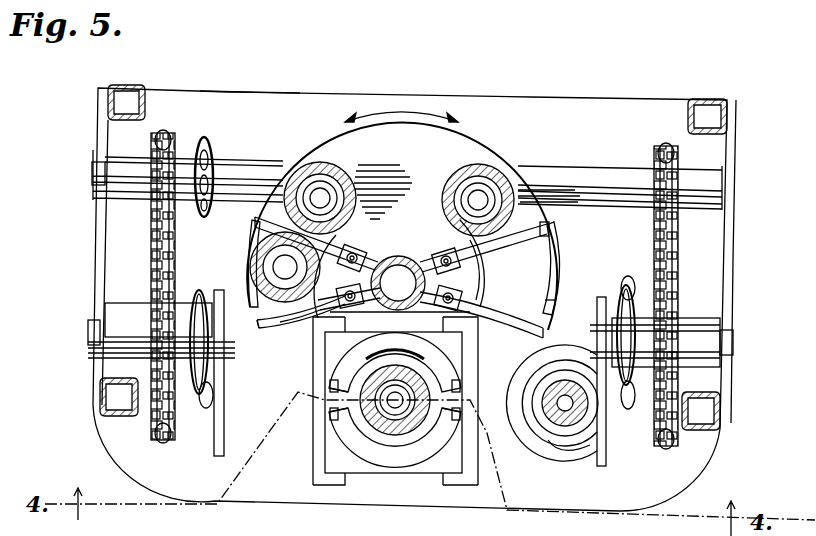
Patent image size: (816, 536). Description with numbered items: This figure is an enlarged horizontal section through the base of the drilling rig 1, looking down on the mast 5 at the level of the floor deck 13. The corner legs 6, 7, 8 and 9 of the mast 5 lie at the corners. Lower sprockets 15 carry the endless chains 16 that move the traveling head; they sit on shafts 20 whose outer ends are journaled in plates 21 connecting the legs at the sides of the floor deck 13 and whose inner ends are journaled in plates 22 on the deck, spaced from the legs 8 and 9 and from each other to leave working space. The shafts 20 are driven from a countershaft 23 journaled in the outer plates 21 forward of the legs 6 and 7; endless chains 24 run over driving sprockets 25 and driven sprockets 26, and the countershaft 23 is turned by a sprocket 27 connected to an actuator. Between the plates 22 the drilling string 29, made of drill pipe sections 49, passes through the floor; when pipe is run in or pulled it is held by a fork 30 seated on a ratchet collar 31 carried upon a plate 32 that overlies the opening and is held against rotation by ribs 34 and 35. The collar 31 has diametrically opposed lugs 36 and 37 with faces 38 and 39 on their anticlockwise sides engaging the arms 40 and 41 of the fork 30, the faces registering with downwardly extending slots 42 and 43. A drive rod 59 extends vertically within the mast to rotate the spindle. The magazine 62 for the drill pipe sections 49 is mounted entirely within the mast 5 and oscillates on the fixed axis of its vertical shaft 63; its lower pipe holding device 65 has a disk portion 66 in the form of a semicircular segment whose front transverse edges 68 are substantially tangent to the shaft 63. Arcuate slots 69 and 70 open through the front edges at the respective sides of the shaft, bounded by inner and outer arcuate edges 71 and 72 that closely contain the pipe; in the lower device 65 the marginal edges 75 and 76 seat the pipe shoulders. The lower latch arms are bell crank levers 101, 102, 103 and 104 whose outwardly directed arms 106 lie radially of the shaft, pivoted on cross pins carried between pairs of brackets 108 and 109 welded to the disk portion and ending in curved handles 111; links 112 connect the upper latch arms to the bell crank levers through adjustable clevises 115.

The machine frame 1 is at (736, 105).
The mast 5 is at (612, 97).
The corner leg 6 is at (122, 88).
The corner leg 7 is at (706, 99).
The corner leg 8 is at (116, 415).
The corner leg 9 is at (722, 425).
The floor deck 13 is at (240, 101).
The lower sprockets 15 is at (210, 367).
The endless chains 16 is at (214, 398).
The shafts 20 is at (108, 316).
The plates 21 is at (100, 268).
The plates 22 is at (226, 446).
The countershaft 23 is at (98, 172).
The endless chains 24 is at (152, 238).
The driving sprockets 25 is at (163, 443).
The driven sprockets 26 is at (168, 134).
The sprocket 27 is at (213, 148).
The drilling string 29 is at (409, 448).
The fork 30 is at (357, 427).
The ratchet collar 31 is at (373, 455).
The plate 32 is at (330, 457).
The rib 34 is at (322, 481).
The rib 35 is at (472, 483).
The lug 36 is at (340, 423).
The lug 37 is at (442, 372).
The face 38 is at (330, 412).
The face 39 is at (460, 386).
The arm 40 is at (330, 388).
The arm 41 is at (460, 405).
The slot 42 is at (335, 382).
The slot 43 is at (455, 430).
The drill pipe sections 49 is at (320, 185).
The drive rod 59 is at (555, 440).
The magazine 62 is at (505, 156).
The vertical shaft 63 is at (405, 263).
The lower pipe holding device 65 is at (553, 257).
The disk portion 66 is at (425, 127).
The front transverse edges 68 is at (372, 313).
The arcuate slot 69 is at (260, 232).
The arcuate slot 70 is at (545, 290).
The inner arcuate edge 71 is at (362, 245).
The outer arcuate edge 72 is at (548, 305).
The marginal edge 75 is at (252, 250).
The marginal edge 76 is at (300, 313).
The bell crank lever 101 is at (352, 171).
The bell crank lever 102 is at (293, 329).
The bell crank lever 103 is at (497, 246).
The bell crank lever 104 is at (490, 313).
The outwardly directed arms 106 is at (497, 301).
The bracket 108 is at (440, 255).
The bracket 109 is at (446, 255).
The handles 111 is at (258, 328).
The links 112 is at (360, 257).
The clevises 115 is at (468, 273).